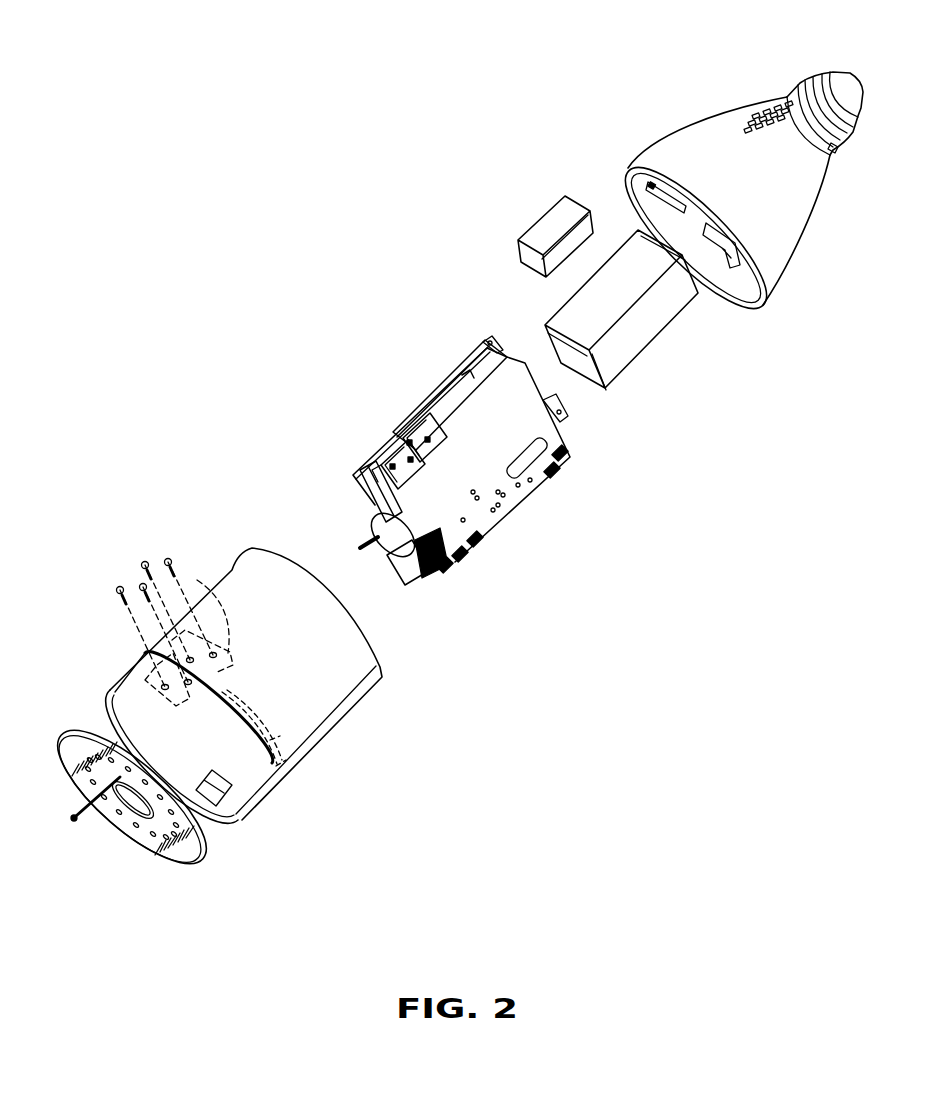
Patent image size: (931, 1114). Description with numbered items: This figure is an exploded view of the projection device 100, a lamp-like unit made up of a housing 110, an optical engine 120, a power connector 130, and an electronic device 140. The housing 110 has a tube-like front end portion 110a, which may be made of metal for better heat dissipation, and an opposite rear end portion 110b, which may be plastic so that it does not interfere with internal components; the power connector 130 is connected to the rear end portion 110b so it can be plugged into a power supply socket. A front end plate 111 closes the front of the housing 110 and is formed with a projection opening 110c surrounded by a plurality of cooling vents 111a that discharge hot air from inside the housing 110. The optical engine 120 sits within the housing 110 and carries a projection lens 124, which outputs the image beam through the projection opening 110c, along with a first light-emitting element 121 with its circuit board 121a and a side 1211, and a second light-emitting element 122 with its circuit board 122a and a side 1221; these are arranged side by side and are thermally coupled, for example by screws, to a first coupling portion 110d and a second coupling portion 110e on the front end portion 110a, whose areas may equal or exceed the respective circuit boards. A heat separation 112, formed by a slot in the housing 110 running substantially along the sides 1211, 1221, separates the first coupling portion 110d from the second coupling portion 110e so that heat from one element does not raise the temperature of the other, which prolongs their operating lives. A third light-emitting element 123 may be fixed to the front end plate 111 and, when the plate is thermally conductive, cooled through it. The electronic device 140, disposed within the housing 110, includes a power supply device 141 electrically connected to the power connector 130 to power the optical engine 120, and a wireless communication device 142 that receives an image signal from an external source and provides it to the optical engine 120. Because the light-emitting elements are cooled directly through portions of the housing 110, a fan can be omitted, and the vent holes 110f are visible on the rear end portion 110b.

The projection device 100 is at (312, 172).
The housing 110 is at (158, 170).
The front end portion 110a is at (245, 587).
The rear end portion 110b is at (692, 132).
The projection opening 110c is at (130, 803).
The first coupling portion 110d is at (140, 665).
The second coupling portion 110e is at (200, 590).
The vent holes 110f is at (757, 110).
The front end plate 111 is at (178, 900).
The cooling vents 111a is at (147, 837).
The heat separation 112 is at (293, 758).
The optical engine 120 is at (373, 318).
The first light-emitting element 121 is at (385, 450).
The circuit board 121a is at (370, 450).
The side 1211 is at (370, 465).
The second light-emitting element 122 is at (407, 427).
The circuit board 122a is at (400, 430).
The side 1221 is at (430, 423).
The third light-emitting element 123 is at (370, 507).
The projection lens 124 is at (387, 550).
The power connector 130 is at (782, 100).
The electronic device 140 is at (500, 222).
The power supply device 141 is at (573, 307).
The wireless communication device 142 is at (557, 213).